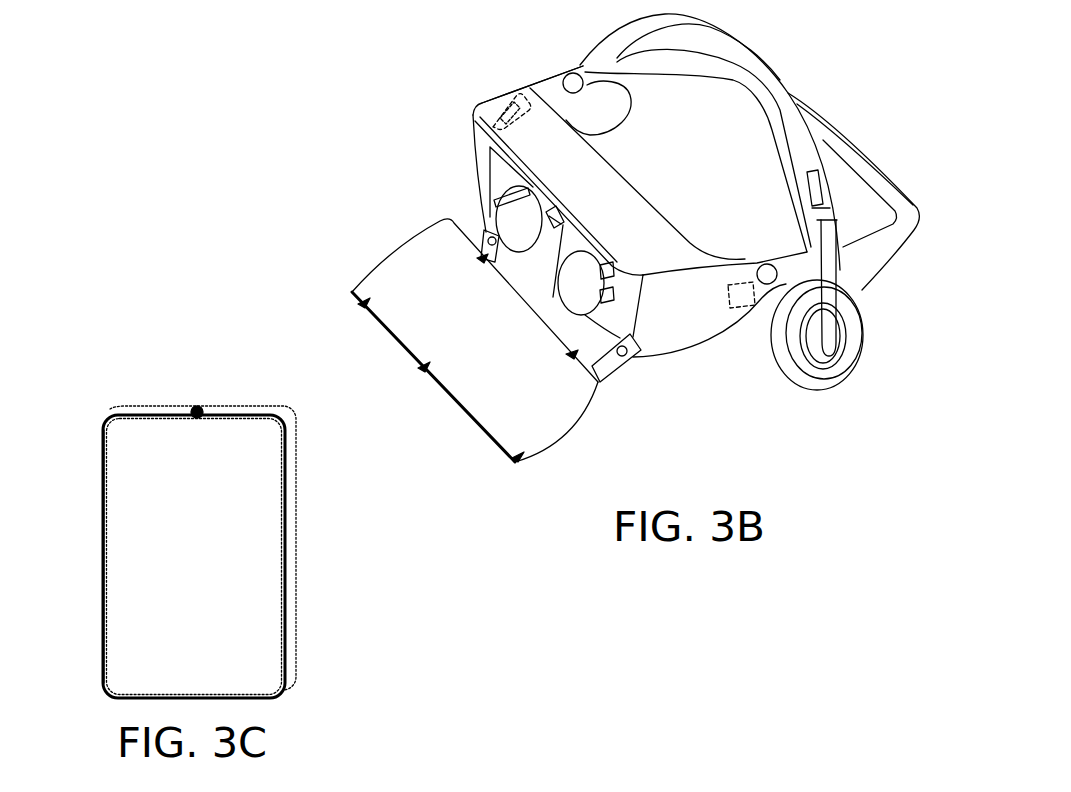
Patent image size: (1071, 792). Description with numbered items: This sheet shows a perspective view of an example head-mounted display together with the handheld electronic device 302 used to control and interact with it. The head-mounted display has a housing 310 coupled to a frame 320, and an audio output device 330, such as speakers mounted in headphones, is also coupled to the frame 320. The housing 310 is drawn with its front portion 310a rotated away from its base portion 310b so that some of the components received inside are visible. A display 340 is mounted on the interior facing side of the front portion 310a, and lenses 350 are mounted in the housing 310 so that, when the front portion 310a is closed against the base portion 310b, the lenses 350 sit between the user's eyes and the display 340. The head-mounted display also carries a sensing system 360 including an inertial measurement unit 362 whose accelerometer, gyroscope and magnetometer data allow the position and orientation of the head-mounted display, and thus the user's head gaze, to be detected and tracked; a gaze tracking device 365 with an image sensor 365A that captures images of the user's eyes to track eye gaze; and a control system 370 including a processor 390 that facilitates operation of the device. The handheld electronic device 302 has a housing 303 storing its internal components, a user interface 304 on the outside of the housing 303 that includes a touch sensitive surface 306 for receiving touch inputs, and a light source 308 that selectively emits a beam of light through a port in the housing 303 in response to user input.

In FIG. 3C, the handheld electronic device 302 is at (82, 398).
In FIG. 3C, the housing 303 is at (148, 407).
In FIG. 3C, the user interface 304 is at (109, 581).
In FIG. 3C, the touch sensitive surface 306 is at (127, 531).
In FIG. 3C, the light source 308 is at (197, 406).
In FIG. 3B, the housing 310 is at (472, 80).
In FIG. 3B, the front portion 310a is at (358, 300).
In FIG. 3B, the base portion 310b is at (518, 95).
In FIG. 3B, the frame 320 is at (880, 168).
In FIG. 3B, the audio output device 330 is at (870, 292).
In FIG. 3B, the display 340 is at (400, 265).
In FIG. 3B, the lenses 350 is at (482, 215).
In FIG. 3B, the sensing system 360 is at (487, 108).
In FIG. 3B, the inertial measurement unit 362 is at (497, 120).
In FIG. 3B, the gaze tracking device 365 is at (565, 213).
In FIG. 3B, the image sensor 365A is at (563, 217).
In FIG. 3B, the control system 370 is at (769, 355).
In FIG. 3B, the processor 390 is at (738, 300).